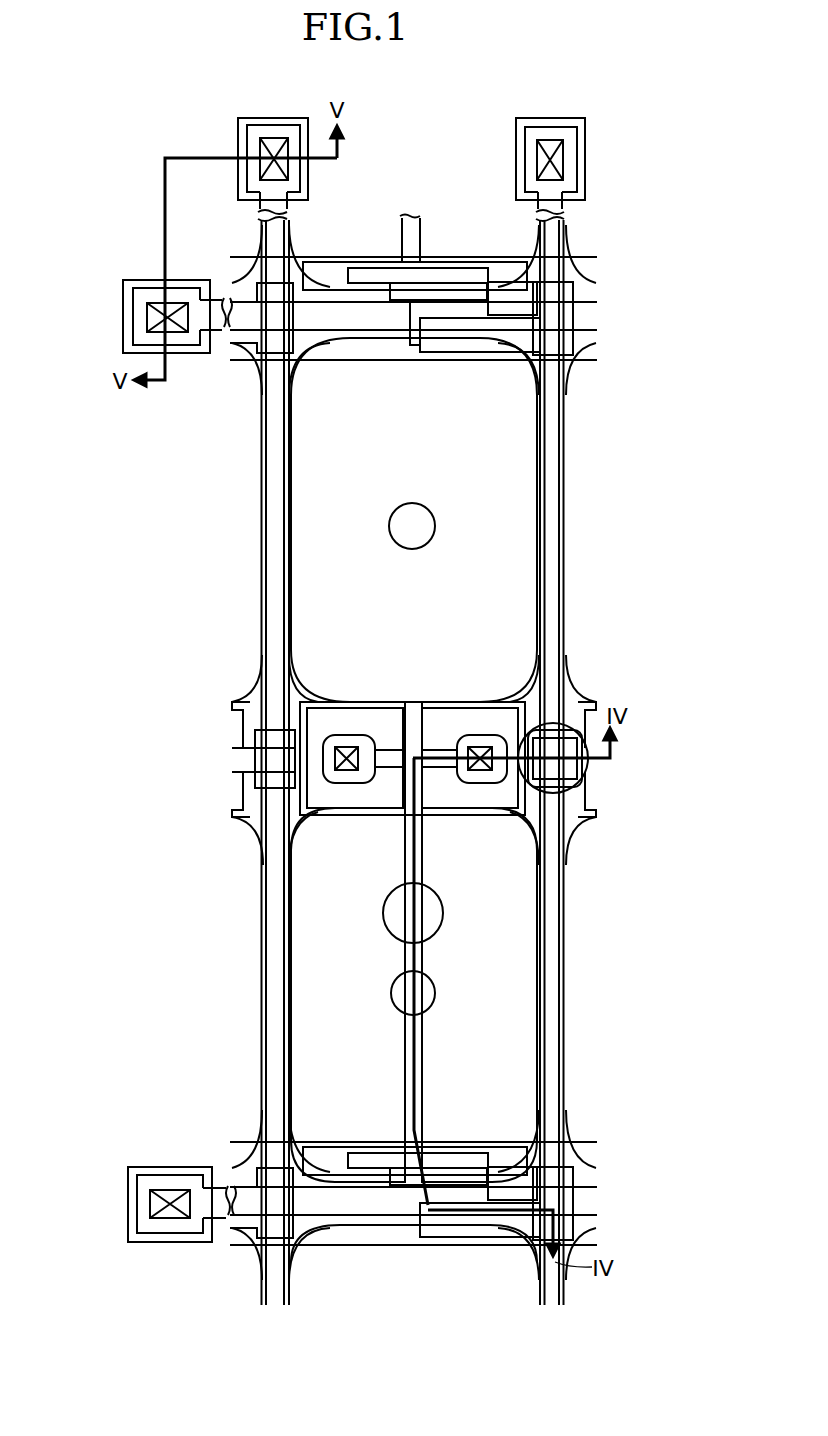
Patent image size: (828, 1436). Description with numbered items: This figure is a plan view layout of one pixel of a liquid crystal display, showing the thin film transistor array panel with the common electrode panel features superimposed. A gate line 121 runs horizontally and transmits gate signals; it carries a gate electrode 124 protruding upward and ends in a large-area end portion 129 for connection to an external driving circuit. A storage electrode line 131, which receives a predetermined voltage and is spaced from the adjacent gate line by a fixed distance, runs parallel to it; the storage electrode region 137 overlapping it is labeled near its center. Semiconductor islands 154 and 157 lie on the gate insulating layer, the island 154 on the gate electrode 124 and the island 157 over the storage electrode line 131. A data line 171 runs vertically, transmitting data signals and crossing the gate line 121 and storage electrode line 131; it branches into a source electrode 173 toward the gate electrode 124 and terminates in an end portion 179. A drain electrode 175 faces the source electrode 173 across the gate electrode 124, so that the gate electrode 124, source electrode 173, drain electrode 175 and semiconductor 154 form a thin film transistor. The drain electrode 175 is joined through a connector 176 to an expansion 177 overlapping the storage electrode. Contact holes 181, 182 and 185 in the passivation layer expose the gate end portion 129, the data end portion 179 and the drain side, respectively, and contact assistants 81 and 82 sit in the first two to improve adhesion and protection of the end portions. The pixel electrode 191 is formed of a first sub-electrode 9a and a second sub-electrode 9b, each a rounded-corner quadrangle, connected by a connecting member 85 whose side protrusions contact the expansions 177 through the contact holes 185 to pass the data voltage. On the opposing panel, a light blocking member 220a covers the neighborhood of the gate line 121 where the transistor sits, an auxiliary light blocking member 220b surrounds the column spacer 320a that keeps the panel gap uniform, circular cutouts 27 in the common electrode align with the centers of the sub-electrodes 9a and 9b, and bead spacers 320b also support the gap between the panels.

The gate line 121 is at (340, 1220).
The gate electrode 124 is at (393, 1167).
The end portion of gate line 129 is at (133, 300).
The storage electrode line 131 is at (277, 750).
The storage electrode 137 is at (297, 712).
The semiconductor island 154 is at (483, 1240).
The semiconductor island 157 is at (260, 782).
The data line 171 is at (543, 1013).
The source electrode 173 is at (452, 1245).
The drain electrode 175 is at (508, 1150).
The connector 176 is at (428, 1061).
The expansion 177 is at (352, 815).
The end portion of data line 179 is at (577, 138).
The contact hole 181 is at (147, 318).
The contact hole 182 is at (545, 140).
The contact hole 185 is at (345, 745).
The contact assistant 81 is at (133, 283).
The contact assistant 82 is at (585, 176).
The connecting member 85 is at (405, 735).
The pixel electrode 191 is at (643, 672).
The first sub-electrode 9a is at (573, 826).
The second sub-electrode 9b is at (577, 694).
The light blocking member 220a is at (248, 1142).
The auxiliary light blocking member 220b is at (503, 712).
The circular cutout 27 is at (436, 527).
The column spacer 320a is at (548, 795).
The bead spacer 320b is at (444, 913).